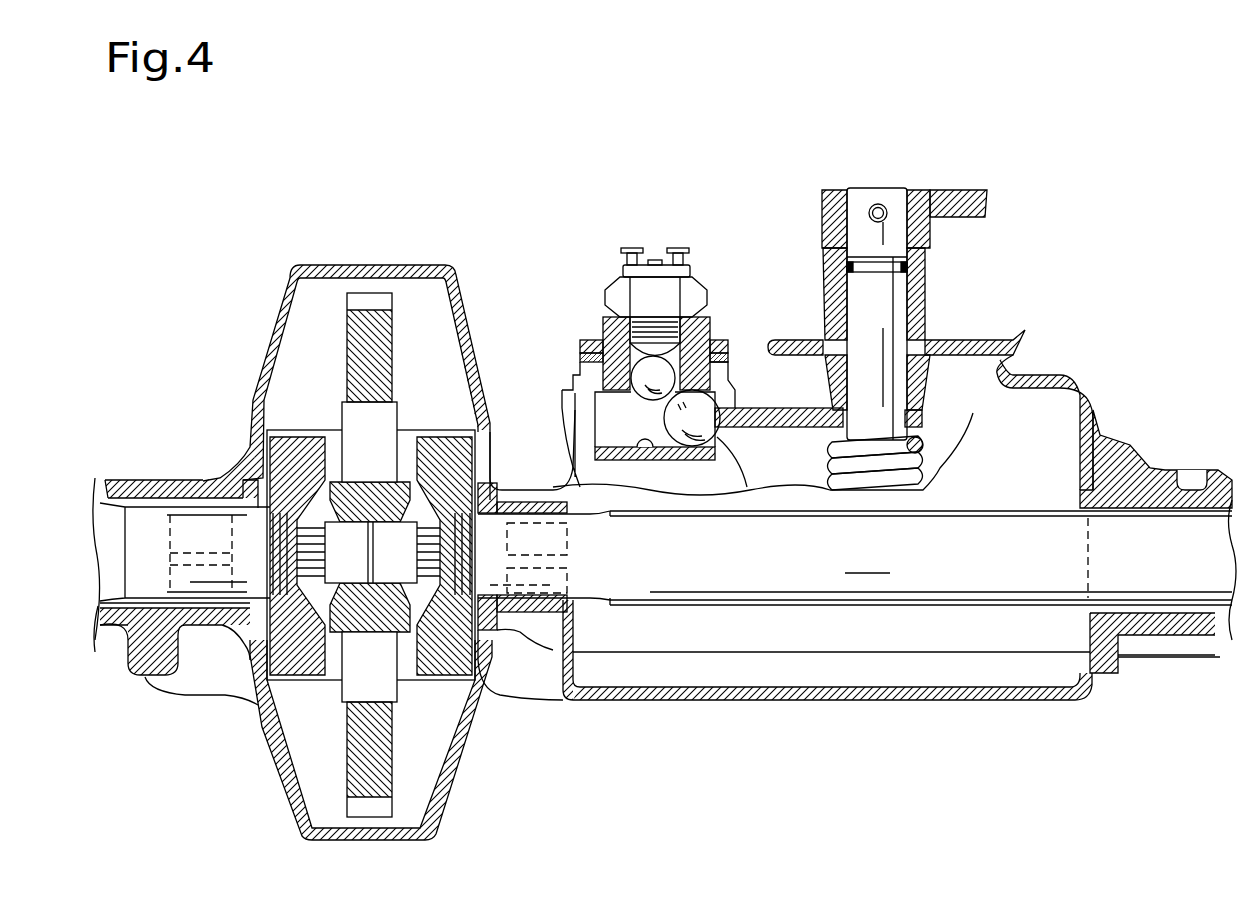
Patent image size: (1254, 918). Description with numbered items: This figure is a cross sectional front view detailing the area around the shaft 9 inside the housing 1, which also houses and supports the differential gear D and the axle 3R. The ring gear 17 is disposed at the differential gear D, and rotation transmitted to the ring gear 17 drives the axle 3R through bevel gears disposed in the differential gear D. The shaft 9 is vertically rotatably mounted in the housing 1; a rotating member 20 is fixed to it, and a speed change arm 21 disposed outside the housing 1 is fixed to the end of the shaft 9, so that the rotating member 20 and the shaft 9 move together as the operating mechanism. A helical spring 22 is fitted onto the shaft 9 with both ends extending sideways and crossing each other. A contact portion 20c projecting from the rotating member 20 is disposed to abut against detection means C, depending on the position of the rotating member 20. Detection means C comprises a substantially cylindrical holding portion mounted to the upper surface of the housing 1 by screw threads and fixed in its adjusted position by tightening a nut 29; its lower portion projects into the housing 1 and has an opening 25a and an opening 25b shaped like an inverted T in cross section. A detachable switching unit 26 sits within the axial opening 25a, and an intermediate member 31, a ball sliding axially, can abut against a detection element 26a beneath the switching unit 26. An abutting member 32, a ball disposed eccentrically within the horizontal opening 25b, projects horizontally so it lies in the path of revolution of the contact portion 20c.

The housing 1 is at (1080, 395).
The axle 3R is at (985, 590).
The shaft 9 is at (888, 190).
The ring gear 17 is at (395, 320).
The rotating member 20 is at (815, 427).
The contact portion 20c is at (745, 410).
The speed change arm 21 is at (962, 190).
The helical spring 22 is at (940, 465).
The opening 25a is at (605, 340).
The opening 25b is at (652, 462).
The switching unit 26 is at (650, 248).
The detection element 26a is at (660, 320).
The nut 29 is at (590, 345).
The intermediate member 31 is at (562, 400).
The abutting member 32 is at (758, 440).
The detection means C is at (565, 270).
The differential gear D is at (325, 306).